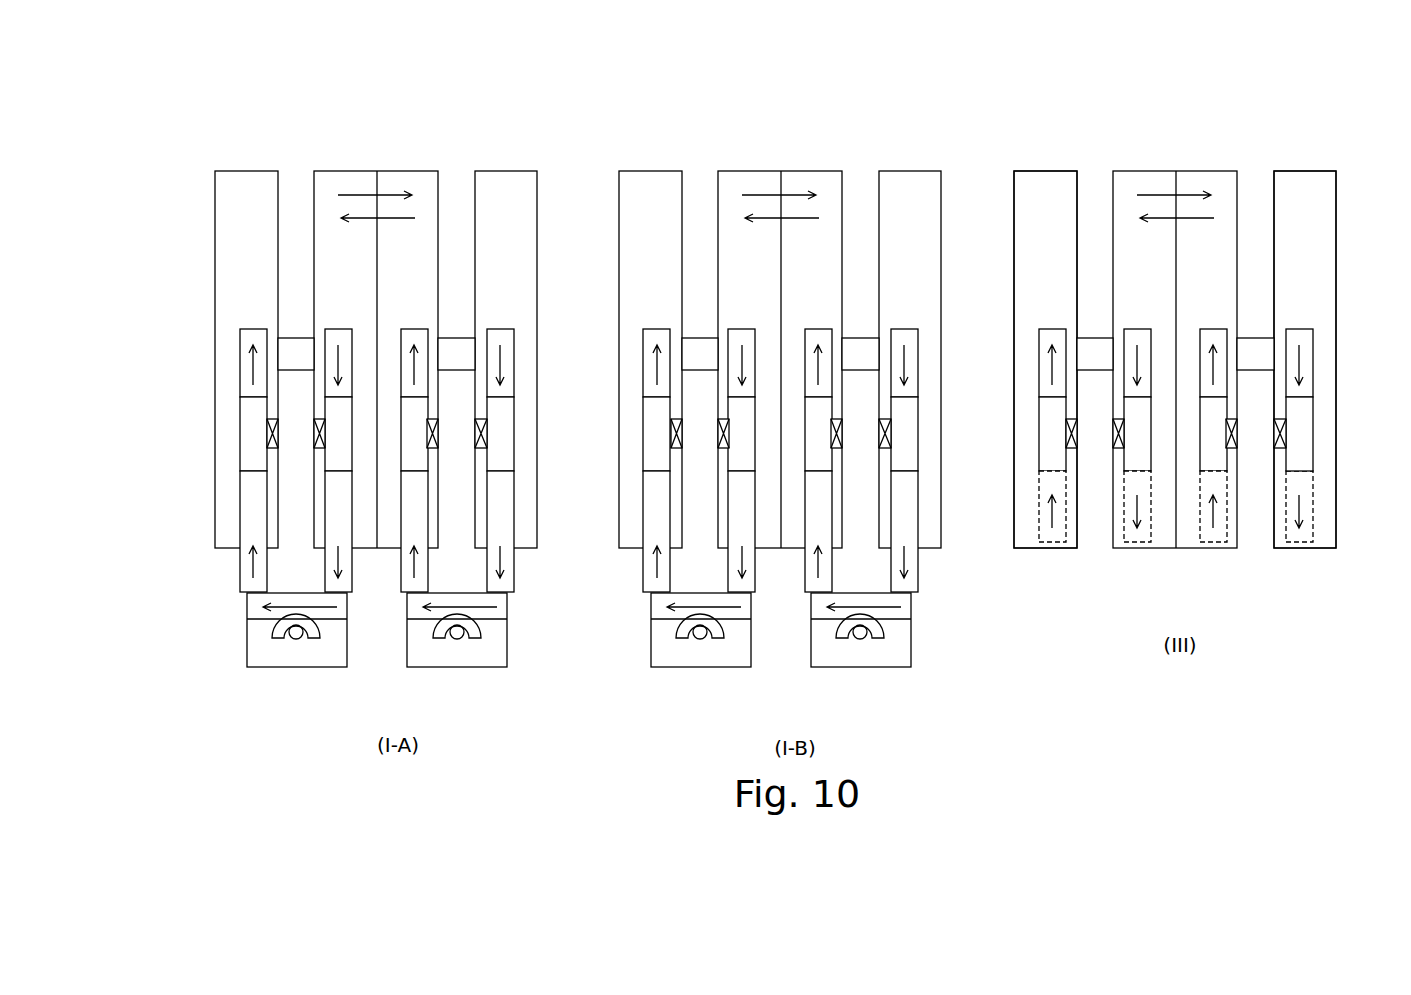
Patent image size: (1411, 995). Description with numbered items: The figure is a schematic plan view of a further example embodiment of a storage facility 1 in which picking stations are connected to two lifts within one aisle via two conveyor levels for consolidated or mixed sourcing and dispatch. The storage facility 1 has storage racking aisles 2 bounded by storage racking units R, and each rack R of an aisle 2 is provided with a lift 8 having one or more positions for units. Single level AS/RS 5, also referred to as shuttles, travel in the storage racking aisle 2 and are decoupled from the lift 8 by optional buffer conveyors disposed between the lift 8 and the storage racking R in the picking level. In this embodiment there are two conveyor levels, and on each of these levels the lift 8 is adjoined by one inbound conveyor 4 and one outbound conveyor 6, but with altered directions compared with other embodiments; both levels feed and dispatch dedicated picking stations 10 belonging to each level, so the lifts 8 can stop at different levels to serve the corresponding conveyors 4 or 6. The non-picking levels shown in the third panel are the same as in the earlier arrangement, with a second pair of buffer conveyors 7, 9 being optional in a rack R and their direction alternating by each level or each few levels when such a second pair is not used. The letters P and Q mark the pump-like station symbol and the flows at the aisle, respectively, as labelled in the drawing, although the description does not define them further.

The storage facility 1 is at (203, 90).
The storage racking aisle 2 is at (1097, 552).
The inbound conveyor 4 is at (247, 574).
The single level AS/RS 5 is at (776, 354).
The outbound conveyor 6 is at (335, 572).
The buffer conveyor 7 is at (1217, 334).
The lift 8 is at (248, 430).
The buffer conveyor 9 is at (1303, 333).
The picking station 10 is at (530, 667).
The pump P is at (862, 674).
The heat flow Q is at (360, 193).
The storage racking unit R is at (256, 217).